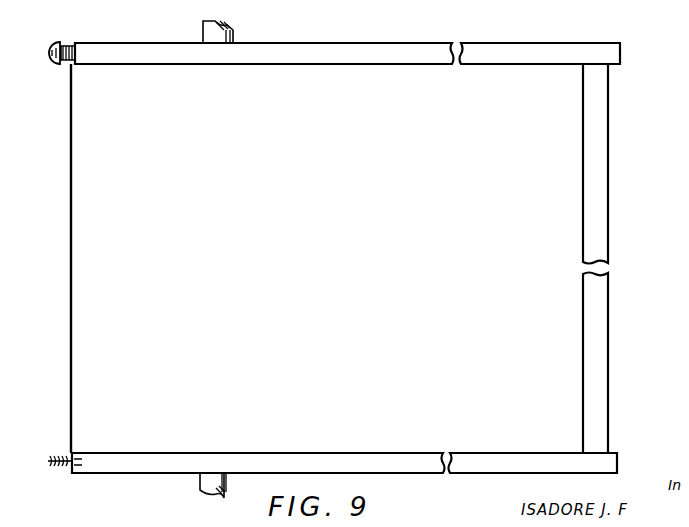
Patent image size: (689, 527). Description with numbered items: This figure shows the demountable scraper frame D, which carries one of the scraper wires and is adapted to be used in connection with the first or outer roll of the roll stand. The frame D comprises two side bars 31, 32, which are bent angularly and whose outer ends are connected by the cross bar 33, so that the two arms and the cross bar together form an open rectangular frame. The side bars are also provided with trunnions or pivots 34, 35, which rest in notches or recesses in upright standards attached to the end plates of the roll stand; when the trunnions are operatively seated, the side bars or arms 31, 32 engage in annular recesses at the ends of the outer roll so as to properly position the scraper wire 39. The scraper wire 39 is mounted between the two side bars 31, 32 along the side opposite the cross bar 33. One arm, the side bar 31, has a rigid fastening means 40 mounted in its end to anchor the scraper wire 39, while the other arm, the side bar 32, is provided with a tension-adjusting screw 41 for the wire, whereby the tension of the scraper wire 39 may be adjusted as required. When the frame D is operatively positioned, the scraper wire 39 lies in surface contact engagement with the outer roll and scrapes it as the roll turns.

The side bar 31 is at (429, 453).
The side bar 32 is at (415, 62).
The cross bar 33 is at (598, 158).
The trunnion 34 is at (200, 478).
The trunnion 35 is at (236, 33).
The scraper wire 39 is at (71, 237).
The rigid fastening means 40 is at (53, 458).
The tension-adjusting screw 41 is at (60, 40).
The frame D is at (612, 313).